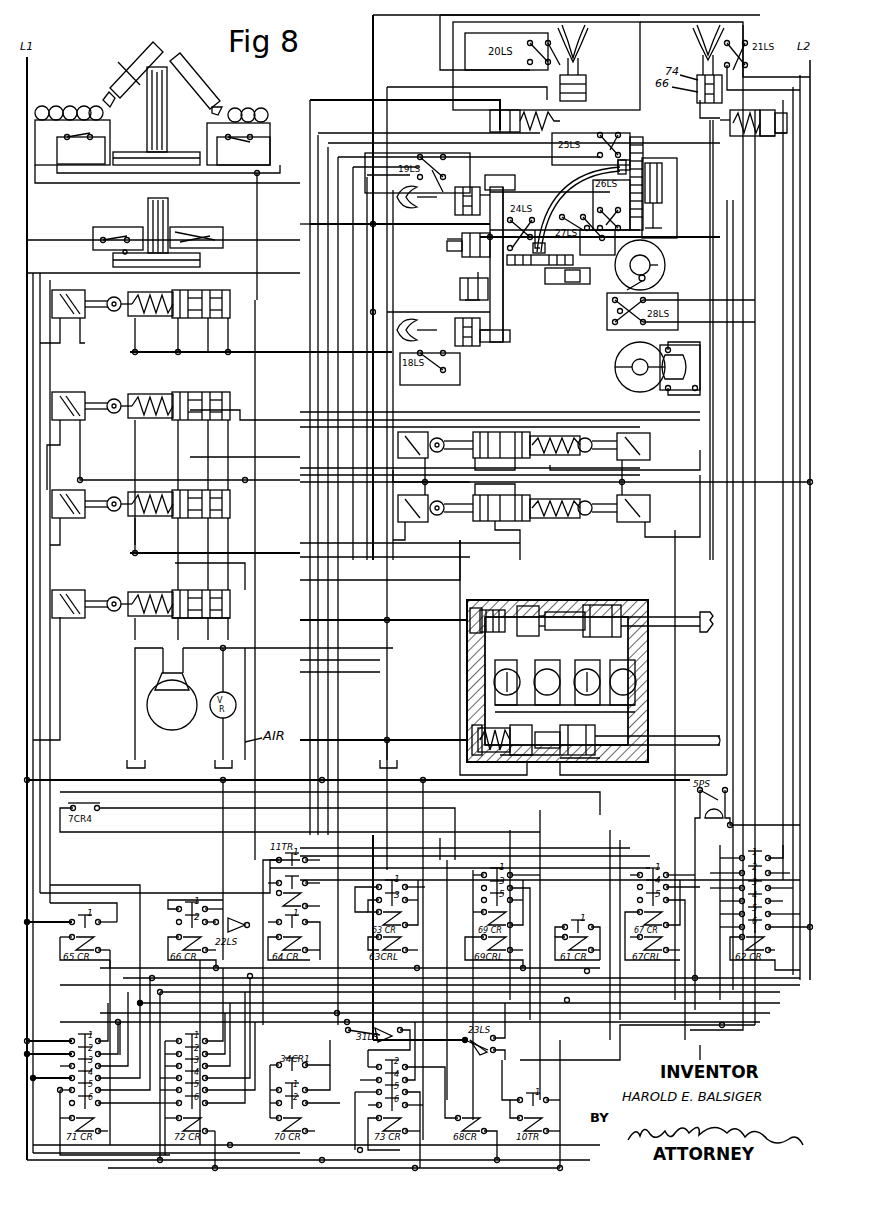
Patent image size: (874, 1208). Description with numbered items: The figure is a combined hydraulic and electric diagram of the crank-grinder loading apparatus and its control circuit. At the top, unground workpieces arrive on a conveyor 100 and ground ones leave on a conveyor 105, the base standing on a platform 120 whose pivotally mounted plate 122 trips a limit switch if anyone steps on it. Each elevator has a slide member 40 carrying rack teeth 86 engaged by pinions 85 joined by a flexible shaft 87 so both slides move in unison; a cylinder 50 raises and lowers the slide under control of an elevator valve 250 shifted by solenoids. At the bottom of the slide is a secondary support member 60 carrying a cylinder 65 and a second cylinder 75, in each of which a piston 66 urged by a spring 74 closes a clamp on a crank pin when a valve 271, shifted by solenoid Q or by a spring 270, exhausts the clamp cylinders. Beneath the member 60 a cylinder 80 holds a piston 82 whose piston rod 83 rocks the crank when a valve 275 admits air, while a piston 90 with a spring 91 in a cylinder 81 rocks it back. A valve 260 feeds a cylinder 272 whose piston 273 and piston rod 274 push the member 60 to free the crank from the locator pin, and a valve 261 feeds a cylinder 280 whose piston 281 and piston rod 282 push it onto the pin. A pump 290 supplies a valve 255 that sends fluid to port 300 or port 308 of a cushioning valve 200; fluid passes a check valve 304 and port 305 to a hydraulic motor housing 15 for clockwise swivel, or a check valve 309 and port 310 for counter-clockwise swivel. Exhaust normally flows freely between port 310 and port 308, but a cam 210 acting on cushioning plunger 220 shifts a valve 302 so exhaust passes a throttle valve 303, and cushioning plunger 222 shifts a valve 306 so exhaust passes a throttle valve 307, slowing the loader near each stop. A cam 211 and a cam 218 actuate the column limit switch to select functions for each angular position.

The hydraulic motor housing 15 is at (625, 378).
The slide member 40 is at (643, 148).
The cylinder 50 is at (662, 177).
The secondary support member 60 is at (503, 318).
The cylinder 65 is at (700, 108).
The piston 66 is at (487, 355).
The spring 74 is at (460, 188).
The second cylinder 75 is at (587, 94).
The cylinder 80 is at (462, 253).
The cylinder 81 is at (470, 278).
The piston 82 is at (447, 239).
The piston rod 83 is at (447, 247).
The pinions 85 is at (514, 264).
The rack teeth 86 is at (645, 155).
The flexible shaft 87 is at (575, 180).
The piston 90 is at (460, 287).
The spring 91 is at (465, 300).
The conveyor 100 is at (110, 126).
The conveyor 105 is at (266, 128).
The platform 120 is at (180, 152).
The pivotally mounted plate 122 is at (207, 232).
The cushioning valve 200 is at (650, 668).
The cam 210 is at (703, 612).
The cam 211 is at (660, 258).
The cam 218 is at (625, 292).
The cushioning plunger 220 is at (662, 616).
The cushioning plunger 222 is at (705, 746).
The elevator valve 250 is at (488, 432).
The valve 255 is at (490, 521).
The valve 260 is at (182, 296).
The valve 261 is at (182, 394).
The spring 270 is at (150, 594).
The valve 271 is at (185, 617).
The cylinder 272 is at (490, 118).
The piston 273 is at (525, 110).
The piston rod 274 is at (556, 100).
The valve 275 is at (182, 494).
The cylinder 280 is at (782, 136).
The piston 281 is at (768, 136).
The piston rod 282 is at (735, 110).
The pump 290 is at (172, 720).
The port 300 is at (522, 600).
The valve 302 is at (595, 605).
The throttle valve 303 is at (470, 718).
The check valve 304 is at (494, 680).
The port 305 is at (566, 612).
The valve 306 is at (620, 765).
The throttle valve 307 is at (636, 682).
The port 308 is at (528, 762).
The check valve 309 is at (636, 708).
The port 310 is at (575, 762).